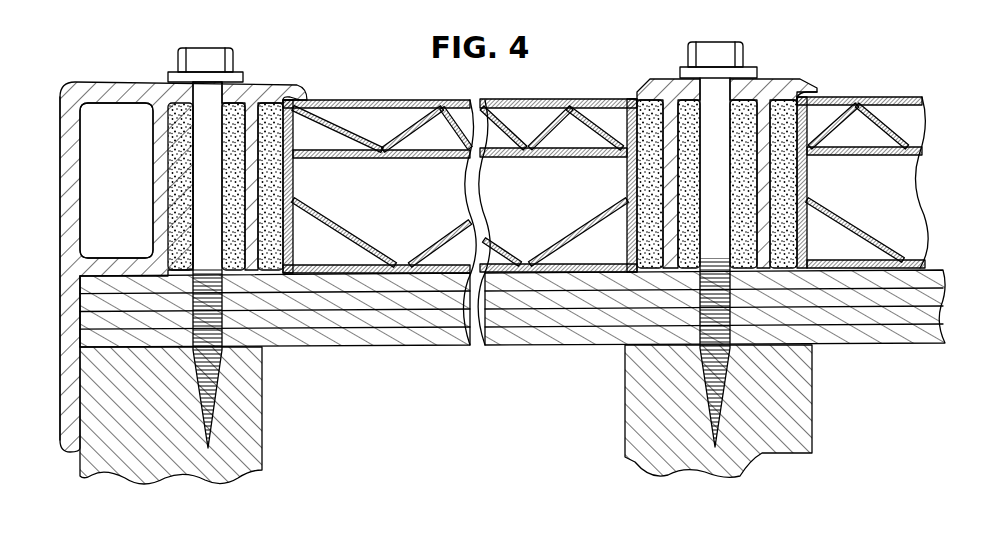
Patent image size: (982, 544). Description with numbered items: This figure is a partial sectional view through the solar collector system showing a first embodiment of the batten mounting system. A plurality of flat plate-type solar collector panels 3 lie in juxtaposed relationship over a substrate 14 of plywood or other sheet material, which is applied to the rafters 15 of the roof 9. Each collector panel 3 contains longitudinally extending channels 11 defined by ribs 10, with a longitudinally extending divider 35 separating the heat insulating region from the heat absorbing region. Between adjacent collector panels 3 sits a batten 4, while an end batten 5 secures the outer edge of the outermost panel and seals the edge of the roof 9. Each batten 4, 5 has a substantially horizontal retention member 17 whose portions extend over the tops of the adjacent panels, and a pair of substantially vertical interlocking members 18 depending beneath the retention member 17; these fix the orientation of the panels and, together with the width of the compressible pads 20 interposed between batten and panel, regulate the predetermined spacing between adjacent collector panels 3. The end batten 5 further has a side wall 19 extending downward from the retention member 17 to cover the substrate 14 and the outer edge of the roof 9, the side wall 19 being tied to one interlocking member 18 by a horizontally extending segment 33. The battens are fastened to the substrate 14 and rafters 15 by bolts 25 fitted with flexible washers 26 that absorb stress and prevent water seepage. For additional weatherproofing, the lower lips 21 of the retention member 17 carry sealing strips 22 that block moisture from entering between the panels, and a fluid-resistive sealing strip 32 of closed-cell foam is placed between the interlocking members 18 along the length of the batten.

The solar collector panel 3 is at (615, 205).
The batten 4 is at (661, 70).
The end batten 5 is at (108, 78).
The roof 9 is at (82, 298).
The rib 10 is at (417, 137).
The channel 11 is at (372, 115).
The substrate 14 is at (347, 317).
The rafter 15 is at (262, 427).
The retention member 17 is at (300, 100).
The interlocking member 18 is at (153, 180).
The side wall 19 is at (60, 138).
The compressible pad 20 is at (290, 252).
The lower lip 21 is at (330, 110).
The sealing strip 22 is at (278, 98).
The bolt 25 is at (198, 48).
The flexible washer 26 is at (170, 78).
The sealing strip 32 is at (177, 143).
The horizontally extending segment 33 is at (127, 264).
The divider 35 is at (397, 160).